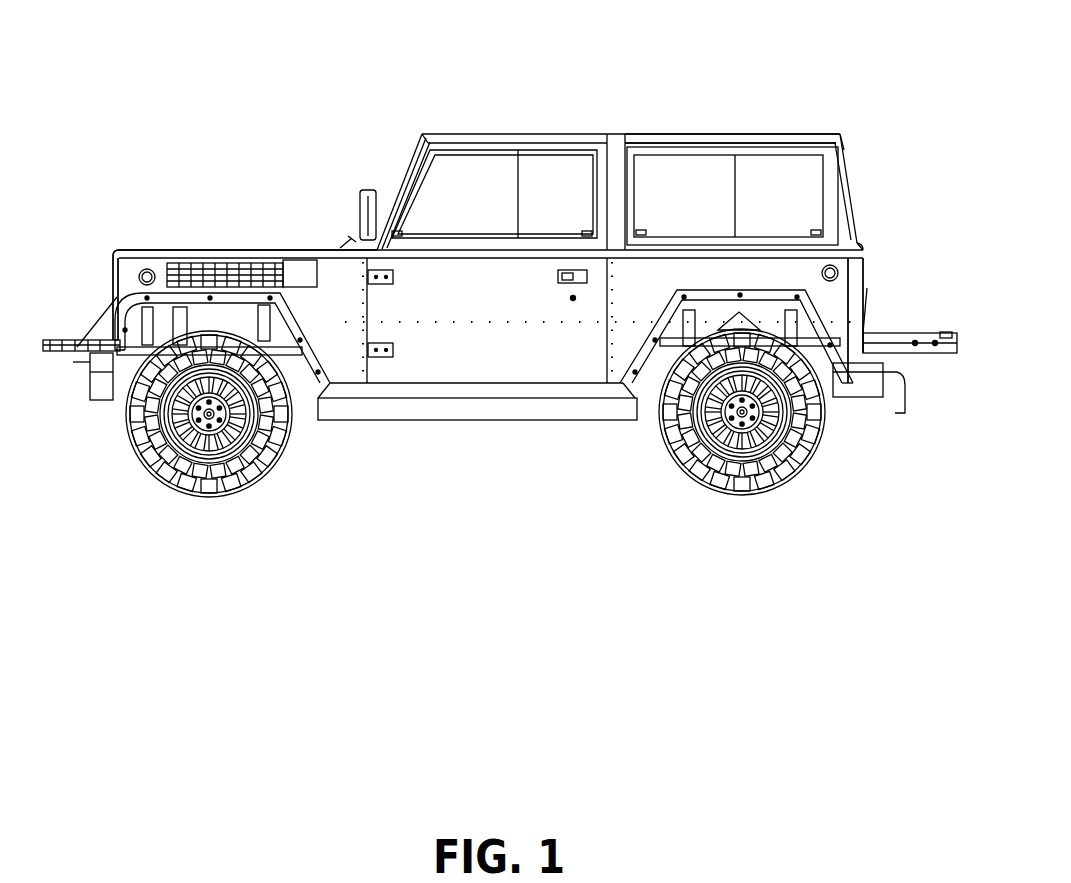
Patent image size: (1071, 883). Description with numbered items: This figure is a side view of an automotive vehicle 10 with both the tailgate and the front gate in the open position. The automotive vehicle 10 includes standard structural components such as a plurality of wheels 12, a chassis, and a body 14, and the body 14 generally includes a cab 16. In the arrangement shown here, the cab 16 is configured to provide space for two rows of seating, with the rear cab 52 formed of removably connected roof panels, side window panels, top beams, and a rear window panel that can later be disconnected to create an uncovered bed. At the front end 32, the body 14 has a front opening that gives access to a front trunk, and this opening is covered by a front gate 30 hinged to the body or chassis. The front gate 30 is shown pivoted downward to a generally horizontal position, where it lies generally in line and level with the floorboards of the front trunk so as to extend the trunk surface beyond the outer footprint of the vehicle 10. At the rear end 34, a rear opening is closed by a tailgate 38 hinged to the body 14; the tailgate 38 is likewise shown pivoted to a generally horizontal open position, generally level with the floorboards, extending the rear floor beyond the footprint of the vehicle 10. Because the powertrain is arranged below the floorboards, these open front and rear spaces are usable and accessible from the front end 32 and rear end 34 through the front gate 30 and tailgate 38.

The automotive vehicle 10 is at (509, 86).
The wheels 12 is at (267, 457).
The body 14 is at (328, 245).
The cab 16 is at (657, 126).
The front gate 30 is at (67, 352).
The front end 32 is at (108, 262).
The rear end 34 is at (862, 264).
The tailgate 38 is at (905, 343).
The rear cab 52 is at (826, 126).